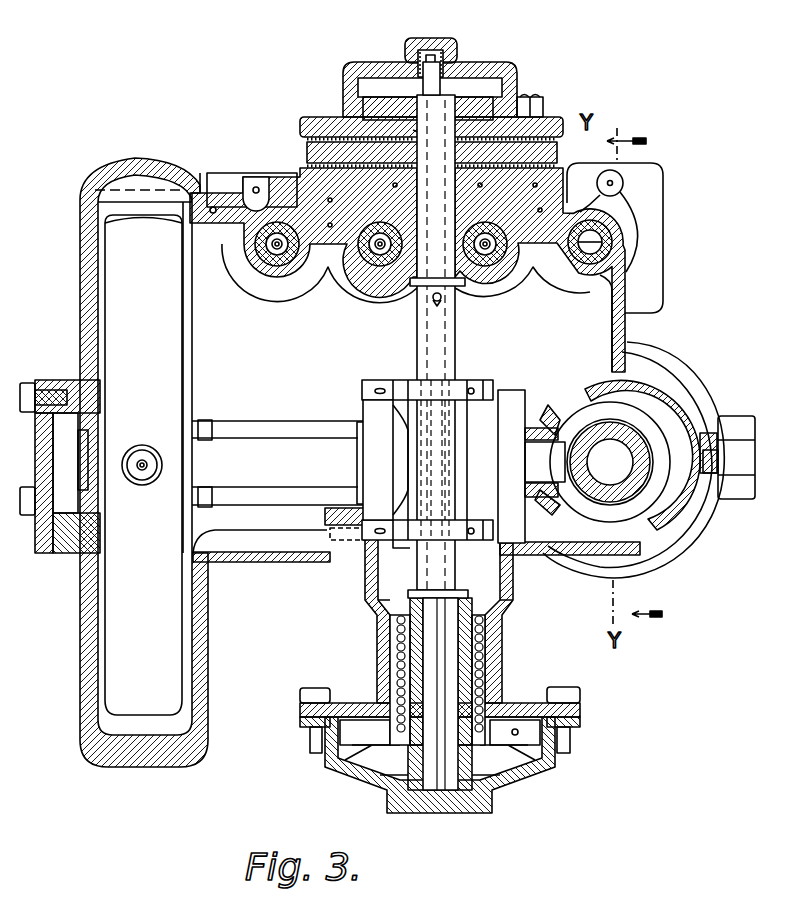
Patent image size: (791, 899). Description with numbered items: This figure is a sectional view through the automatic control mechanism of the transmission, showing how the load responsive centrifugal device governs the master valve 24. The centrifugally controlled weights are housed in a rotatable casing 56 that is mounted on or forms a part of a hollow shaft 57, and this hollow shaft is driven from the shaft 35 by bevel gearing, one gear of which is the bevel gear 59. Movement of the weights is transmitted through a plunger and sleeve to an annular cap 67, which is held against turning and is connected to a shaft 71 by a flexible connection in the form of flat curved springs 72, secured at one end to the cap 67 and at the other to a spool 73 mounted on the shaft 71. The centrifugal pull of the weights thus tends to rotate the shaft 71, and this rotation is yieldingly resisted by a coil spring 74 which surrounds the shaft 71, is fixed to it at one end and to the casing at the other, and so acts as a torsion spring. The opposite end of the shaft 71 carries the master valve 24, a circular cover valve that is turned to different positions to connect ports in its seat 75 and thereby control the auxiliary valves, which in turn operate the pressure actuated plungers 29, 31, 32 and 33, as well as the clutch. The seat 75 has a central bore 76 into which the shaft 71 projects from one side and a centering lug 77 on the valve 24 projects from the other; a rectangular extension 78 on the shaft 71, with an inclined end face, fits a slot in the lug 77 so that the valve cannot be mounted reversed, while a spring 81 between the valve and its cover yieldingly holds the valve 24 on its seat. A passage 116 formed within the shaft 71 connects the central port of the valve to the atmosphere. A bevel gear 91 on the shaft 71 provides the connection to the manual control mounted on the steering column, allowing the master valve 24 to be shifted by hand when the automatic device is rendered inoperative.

The master valve 24 is at (373, 97).
The pressure actuated plunger 29 is at (618, 242).
The pressure actuated plunger 31 is at (495, 258).
The pressure actuated plunger 32 is at (372, 277).
The pressure actuated plunger 33 is at (265, 277).
The shaft 35 is at (636, 457).
The rotatable casing 56 is at (144, 462).
The hollow shaft 57 is at (279, 463).
The bevel gear 59 is at (535, 408).
The annular cap 67 is at (365, 412).
The shaft 71 is at (438, 426).
The flat curved springs 72 is at (362, 385).
The spool 73 is at (410, 380).
The coil spring 74 is at (385, 628).
The valve seat 75 is at (548, 117).
The central aperture or bore 76 is at (510, 169).
The centering lug 77 is at (513, 78).
The rectangular extension 78 is at (420, 150).
The spring 81 is at (458, 53).
The bevel gear 91 is at (380, 775).
The passage 116 is at (443, 299).